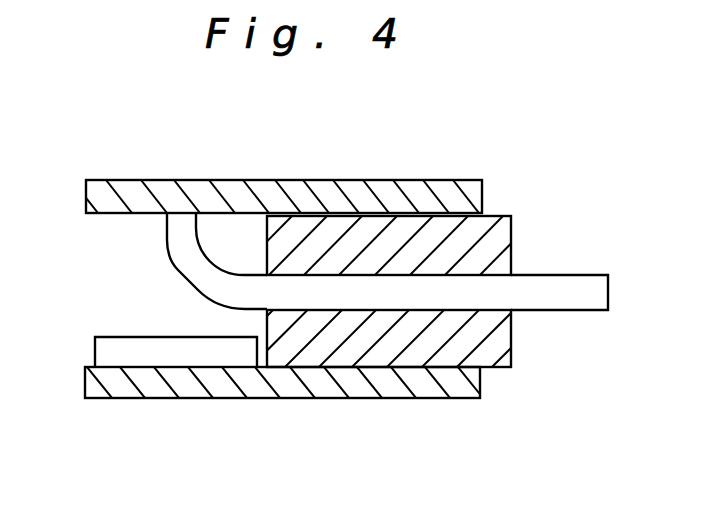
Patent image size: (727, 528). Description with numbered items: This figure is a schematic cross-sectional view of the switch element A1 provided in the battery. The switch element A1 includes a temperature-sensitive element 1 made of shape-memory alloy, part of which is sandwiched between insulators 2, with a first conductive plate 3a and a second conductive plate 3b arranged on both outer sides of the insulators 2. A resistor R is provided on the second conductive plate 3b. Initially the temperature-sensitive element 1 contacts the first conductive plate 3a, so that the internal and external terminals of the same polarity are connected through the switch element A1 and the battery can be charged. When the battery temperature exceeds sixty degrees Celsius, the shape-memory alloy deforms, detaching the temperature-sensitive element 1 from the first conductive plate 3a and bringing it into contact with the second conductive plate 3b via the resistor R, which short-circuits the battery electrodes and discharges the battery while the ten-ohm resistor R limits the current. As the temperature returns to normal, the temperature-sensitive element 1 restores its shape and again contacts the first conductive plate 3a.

The temperature-sensitive element 1 is at (575, 298).
The insulators 2 is at (493, 323).
The first conductive plate 3a is at (133, 196).
The second conductive plate 3b is at (157, 383).
The resistor R is at (235, 353).
The switch element A1 is at (413, 153).